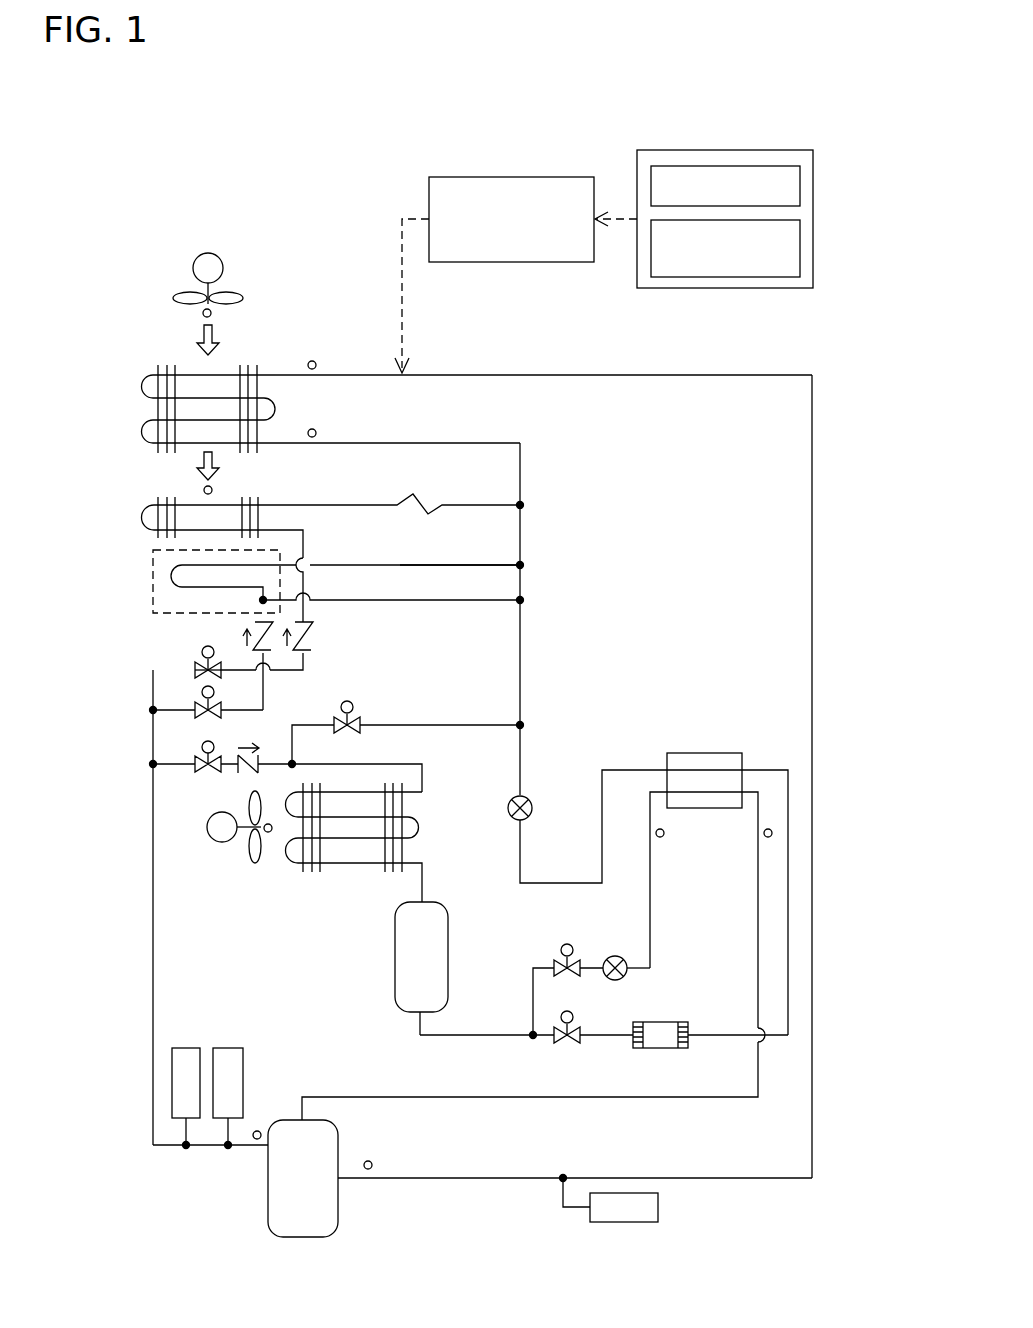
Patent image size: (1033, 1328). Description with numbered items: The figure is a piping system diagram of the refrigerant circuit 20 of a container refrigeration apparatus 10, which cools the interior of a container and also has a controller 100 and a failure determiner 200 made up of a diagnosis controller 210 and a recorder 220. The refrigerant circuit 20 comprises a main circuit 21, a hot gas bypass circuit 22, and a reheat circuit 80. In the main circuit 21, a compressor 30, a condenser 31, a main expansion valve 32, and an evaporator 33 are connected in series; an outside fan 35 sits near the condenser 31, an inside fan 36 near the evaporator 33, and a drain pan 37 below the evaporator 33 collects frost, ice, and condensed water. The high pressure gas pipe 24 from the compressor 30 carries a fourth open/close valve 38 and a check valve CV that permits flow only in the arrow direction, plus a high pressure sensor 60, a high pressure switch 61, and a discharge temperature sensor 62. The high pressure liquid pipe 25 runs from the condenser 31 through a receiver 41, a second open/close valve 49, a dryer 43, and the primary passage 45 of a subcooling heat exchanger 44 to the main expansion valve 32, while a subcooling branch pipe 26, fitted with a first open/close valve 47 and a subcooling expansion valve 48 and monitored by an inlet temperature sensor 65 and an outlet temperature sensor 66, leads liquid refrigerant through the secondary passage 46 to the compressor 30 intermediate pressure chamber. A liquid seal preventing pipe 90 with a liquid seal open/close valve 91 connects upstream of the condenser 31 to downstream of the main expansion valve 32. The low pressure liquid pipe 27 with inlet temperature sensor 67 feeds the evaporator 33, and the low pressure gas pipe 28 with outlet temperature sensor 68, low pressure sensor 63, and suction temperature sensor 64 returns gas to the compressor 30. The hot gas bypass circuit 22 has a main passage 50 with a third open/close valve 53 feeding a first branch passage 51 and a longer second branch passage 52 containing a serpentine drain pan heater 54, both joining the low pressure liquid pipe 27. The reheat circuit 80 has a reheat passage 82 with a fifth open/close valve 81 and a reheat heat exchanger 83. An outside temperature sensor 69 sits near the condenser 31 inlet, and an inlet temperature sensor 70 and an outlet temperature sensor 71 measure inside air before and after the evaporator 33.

The container refrigeration apparatus 10 is at (128, 120).
The refrigerant circuit 20 is at (778, 355).
The main circuit 21 is at (832, 632).
The hot gas bypass circuit 22 is at (130, 688).
The high pressure gas pipe 24 is at (150, 808).
The high pressure liquid pipe 25 is at (503, 1040).
The subcooling branch pipe 26 is at (652, 940).
The low pressure liquid pipe 27 is at (524, 530).
The low pressure gas pipe 28 is at (765, 1180).
The compressor 30 is at (268, 1205).
The condenser 31 is at (420, 826).
The main expansion valve 32 is at (527, 796).
The evaporator 33 is at (141, 382).
The outside fan 35 is at (248, 850).
The inside fan 36 is at (245, 298).
The drain pan 37 is at (152, 560).
The fourth open/close valve 38 is at (195, 760).
The receiver 41 is at (449, 930).
The dryer 43 is at (661, 1049).
The subcooling heat exchanger 44 is at (725, 752).
The primary passage 45 is at (685, 770).
The secondary passage 46 is at (706, 792).
The first open/close valve 47 is at (561, 975).
The subcooling expansion valve 48 is at (625, 978).
The second open/close valve 49 is at (561, 1042).
The main passage 50 is at (150, 724).
The first branch passage 51 is at (417, 603).
The second branch passage 52 is at (468, 562).
The third open/close valve 53 is at (220, 714).
The drain pan heater 54 is at (170, 576).
The high pressure sensor 60 is at (183, 1046).
The high pressure switch 61 is at (225, 1046).
The discharge temperature sensor 62 is at (259, 1130).
The low pressure sensor 63 is at (660, 1208).
The suction temperature sensor 64 is at (372, 1161).
The inlet temperature sensor 65 is at (663, 837).
The outlet temperature sensor 66 is at (772, 833).
The inlet temperature sensor 67 is at (316, 430).
The outlet temperature sensor 68 is at (316, 362).
The outside temperature sensor 69 is at (270, 834).
The inlet temperature sensor 70 is at (203, 314).
The outlet temperature sensor 71 is at (204, 490).
The reheat circuit 80 is at (102, 513).
The fifth open/close valve 81 is at (195, 665).
The reheat passage 82 is at (303, 672).
The reheat heat exchanger 83 is at (141, 509).
The liquid seal preventing pipe 90 is at (408, 725).
The liquid seal open/close valve 91 is at (358, 732).
The controller 100 is at (522, 173).
The failure determiner 200 is at (725, 148).
The diagnosis controller 210 is at (814, 250).
The recorder 220 is at (814, 192).
The check valve CV is at (315, 625).